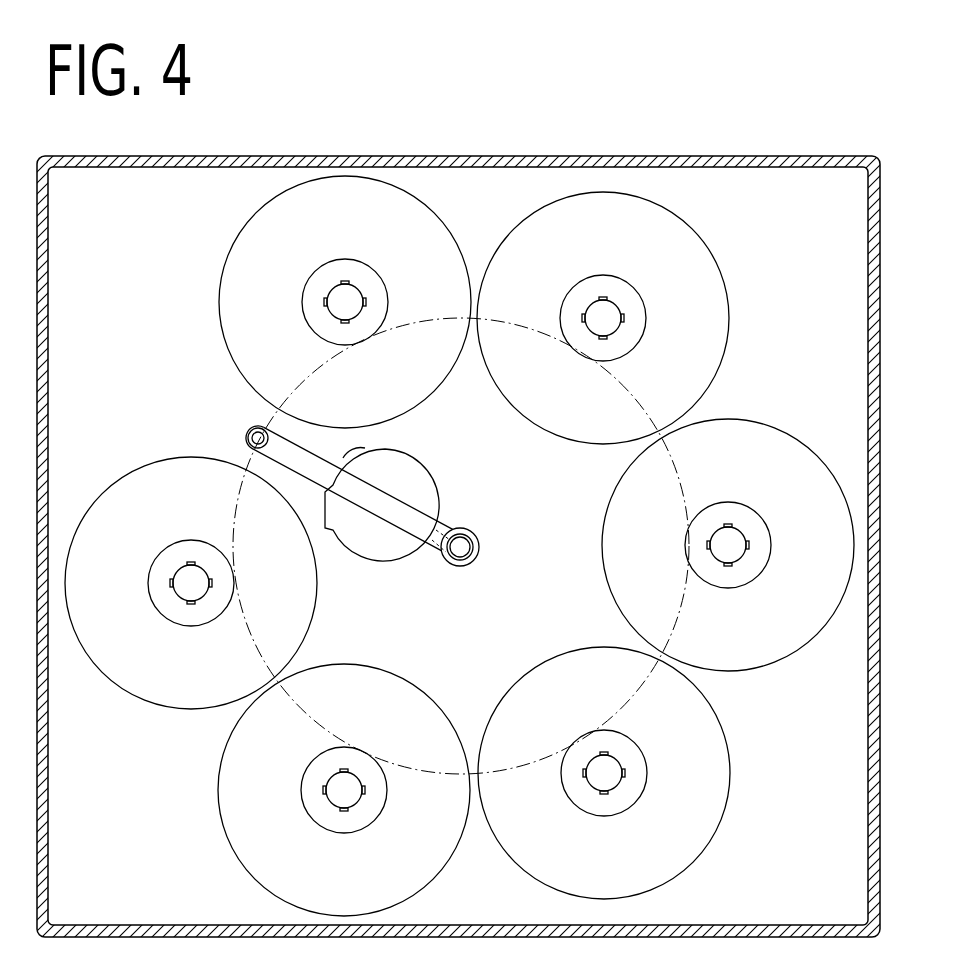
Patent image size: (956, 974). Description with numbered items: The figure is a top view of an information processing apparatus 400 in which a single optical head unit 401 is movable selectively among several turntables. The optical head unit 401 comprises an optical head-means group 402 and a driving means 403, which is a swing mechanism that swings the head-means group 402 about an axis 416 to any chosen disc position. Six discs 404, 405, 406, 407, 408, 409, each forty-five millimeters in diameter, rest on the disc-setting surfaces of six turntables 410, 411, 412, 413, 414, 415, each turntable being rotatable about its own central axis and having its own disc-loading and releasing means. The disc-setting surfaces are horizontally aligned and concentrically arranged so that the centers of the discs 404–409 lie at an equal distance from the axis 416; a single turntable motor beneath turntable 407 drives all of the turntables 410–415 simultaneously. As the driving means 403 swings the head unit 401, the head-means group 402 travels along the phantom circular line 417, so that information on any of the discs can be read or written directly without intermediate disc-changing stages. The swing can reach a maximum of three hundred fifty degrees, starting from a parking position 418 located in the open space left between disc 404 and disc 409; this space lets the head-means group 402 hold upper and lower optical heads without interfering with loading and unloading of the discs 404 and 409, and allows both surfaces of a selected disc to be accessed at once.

The information processing apparatus 400 is at (494, 140).
The optical head unit 401 is at (329, 453).
The optical head-means group 402 is at (250, 440).
The driving means 403 is at (376, 569).
The disc 404 is at (230, 247).
The disc 405 is at (702, 238).
The disc 406 is at (790, 432).
The disc 407 is at (708, 845).
The disc 408 is at (233, 852).
The disc 409 is at (138, 463).
The turntable 410 is at (361, 289).
The turntable 411 is at (619, 305).
The turntable 412 is at (743, 532).
The turntable 413 is at (619, 759).
The turntable 414 is at (328, 782).
The turntable 415 is at (174, 583).
The axis 416 is at (458, 549).
The phantom circular line 417 is at (276, 417).
The position 418 is at (243, 427).